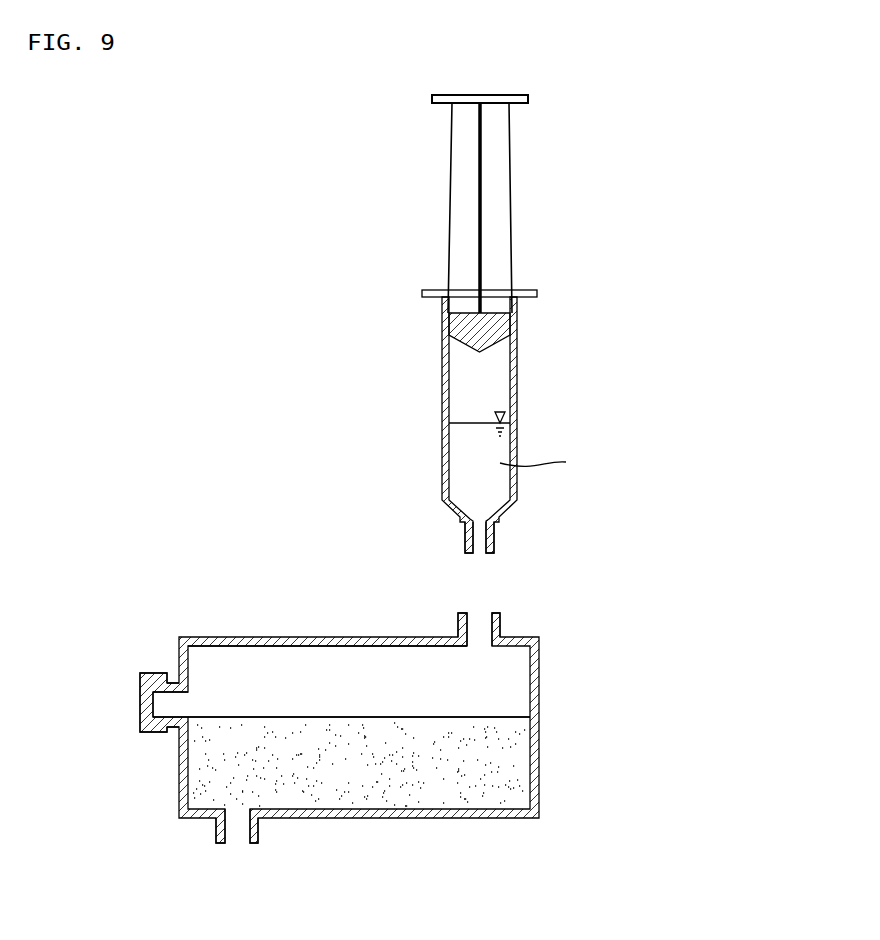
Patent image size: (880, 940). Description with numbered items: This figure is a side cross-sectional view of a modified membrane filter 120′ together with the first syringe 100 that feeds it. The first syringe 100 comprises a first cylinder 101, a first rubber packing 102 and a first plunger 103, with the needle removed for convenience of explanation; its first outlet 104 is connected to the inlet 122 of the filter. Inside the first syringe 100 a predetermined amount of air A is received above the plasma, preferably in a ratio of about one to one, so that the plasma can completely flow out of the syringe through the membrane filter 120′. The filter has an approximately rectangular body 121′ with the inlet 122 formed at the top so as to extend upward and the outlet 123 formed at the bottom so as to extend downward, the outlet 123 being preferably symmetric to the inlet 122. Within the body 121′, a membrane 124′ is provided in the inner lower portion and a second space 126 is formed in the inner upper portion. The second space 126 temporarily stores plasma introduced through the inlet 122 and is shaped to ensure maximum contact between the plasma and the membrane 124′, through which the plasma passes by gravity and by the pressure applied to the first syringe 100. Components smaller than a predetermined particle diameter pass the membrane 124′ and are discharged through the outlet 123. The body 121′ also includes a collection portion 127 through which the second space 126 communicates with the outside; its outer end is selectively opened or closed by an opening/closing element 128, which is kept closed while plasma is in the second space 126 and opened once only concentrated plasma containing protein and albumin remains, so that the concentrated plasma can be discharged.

The first syringe 100 is at (383, 357).
The first cylinder 101 is at (518, 376).
The first rubber packing 102 is at (497, 326).
The first plunger 103 is at (509, 229).
The first outlet 104 is at (496, 532).
The air A is at (467, 388).
The membrane filter 120′ is at (270, 600).
The body 121′ is at (382, 637).
The inlet 122 is at (500, 622).
The outlet 123 is at (259, 831).
The membrane 124′ is at (207, 772).
The second space 126 is at (250, 674).
The collection portion 127 is at (174, 683).
The opening/closing element 128 is at (141, 691).